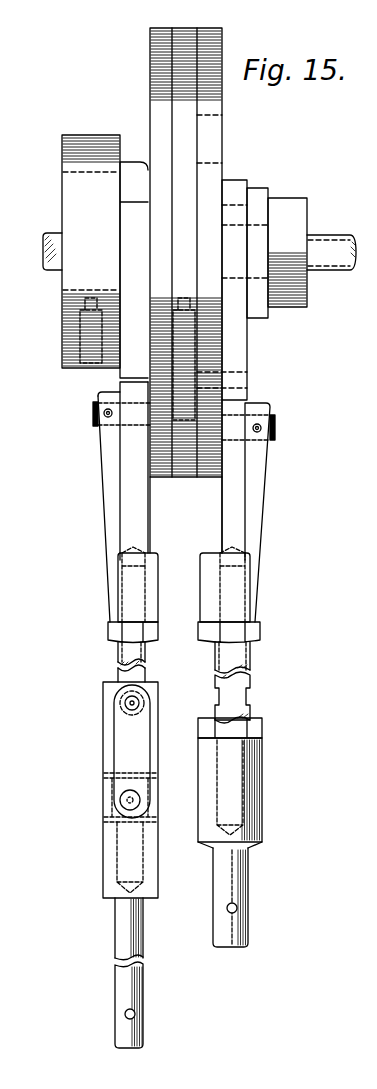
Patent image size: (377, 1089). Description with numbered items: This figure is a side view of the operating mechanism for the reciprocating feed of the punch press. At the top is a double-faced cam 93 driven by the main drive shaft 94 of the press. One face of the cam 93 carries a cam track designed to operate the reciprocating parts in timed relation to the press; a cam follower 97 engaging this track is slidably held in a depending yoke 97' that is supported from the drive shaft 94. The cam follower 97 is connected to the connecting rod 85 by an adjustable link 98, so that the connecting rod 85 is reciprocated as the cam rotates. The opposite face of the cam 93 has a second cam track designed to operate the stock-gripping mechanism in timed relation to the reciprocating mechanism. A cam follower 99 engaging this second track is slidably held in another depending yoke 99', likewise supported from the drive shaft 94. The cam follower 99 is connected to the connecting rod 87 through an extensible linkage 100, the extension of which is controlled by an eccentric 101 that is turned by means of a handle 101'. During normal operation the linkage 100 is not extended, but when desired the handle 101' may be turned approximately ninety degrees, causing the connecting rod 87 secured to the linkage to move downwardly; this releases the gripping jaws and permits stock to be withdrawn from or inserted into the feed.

The connecting rod 85 is at (248, 878).
The connecting rod 87 is at (128, 937).
The double-faced cam 93 is at (223, 148).
The main drive shaft 94 is at (330, 236).
The cam follower 97 is at (264, 498).
The depending yoke 97' is at (268, 480).
The adjustable link 98 is at (250, 660).
The cam follower 99 is at (102, 507).
The depending yoke 99' is at (101, 471).
The extensible linkage 100 is at (104, 790).
The eccentric 101 is at (95, 809).
The handle 101' is at (100, 751).